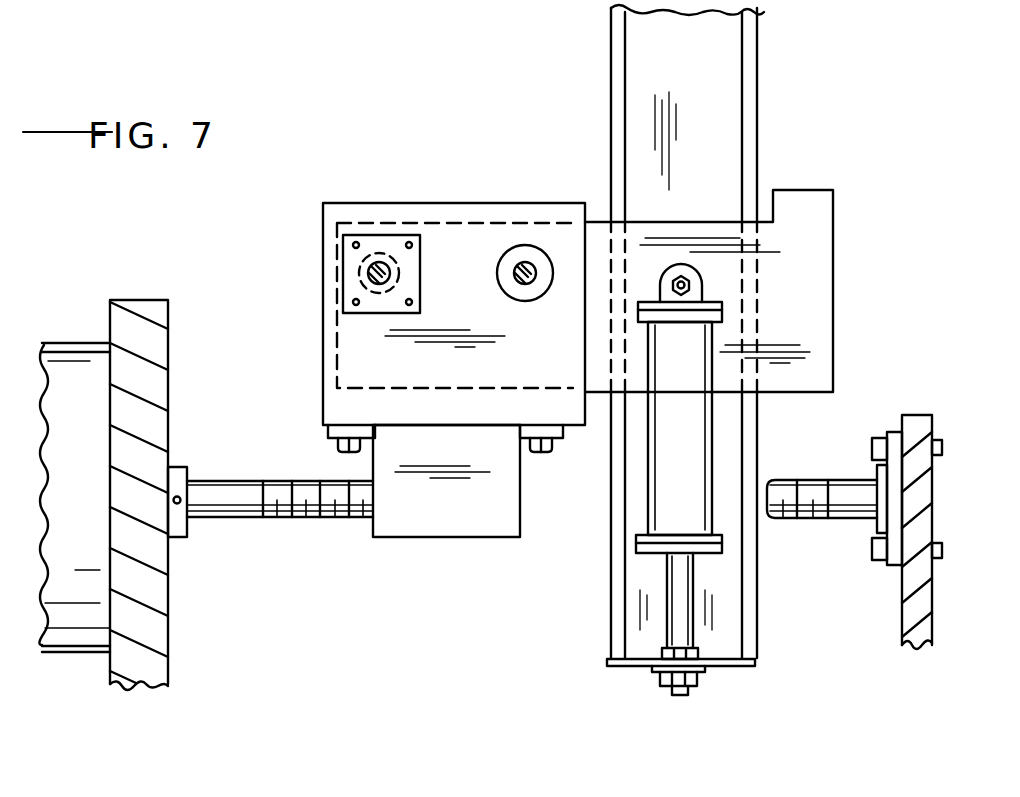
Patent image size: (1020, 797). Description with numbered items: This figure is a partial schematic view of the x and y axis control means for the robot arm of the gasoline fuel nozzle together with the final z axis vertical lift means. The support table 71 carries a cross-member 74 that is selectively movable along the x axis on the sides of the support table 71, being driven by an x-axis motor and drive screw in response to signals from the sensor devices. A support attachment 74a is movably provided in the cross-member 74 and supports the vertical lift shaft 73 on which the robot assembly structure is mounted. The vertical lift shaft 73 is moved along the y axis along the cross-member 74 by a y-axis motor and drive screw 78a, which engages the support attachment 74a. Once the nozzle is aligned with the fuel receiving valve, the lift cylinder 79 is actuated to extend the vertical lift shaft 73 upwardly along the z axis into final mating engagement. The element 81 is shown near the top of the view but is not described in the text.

The support table 71 is at (170, 339).
The vertical lift shaft 73 is at (717, 80).
The cross-member 74 is at (483, 203).
The support attachment 74a is at (808, 228).
The drive screw 78a is at (368, 277).
The lift cylinder 79 is at (665, 487).
The upper member 81 is at (376, 8).